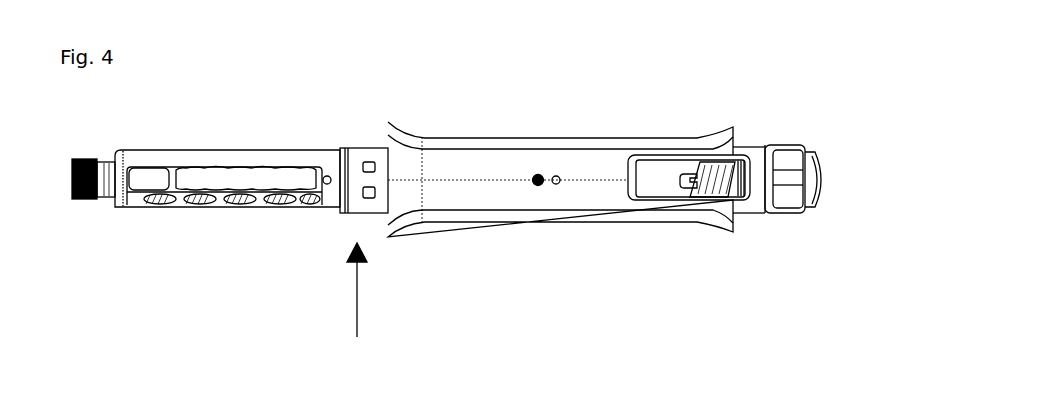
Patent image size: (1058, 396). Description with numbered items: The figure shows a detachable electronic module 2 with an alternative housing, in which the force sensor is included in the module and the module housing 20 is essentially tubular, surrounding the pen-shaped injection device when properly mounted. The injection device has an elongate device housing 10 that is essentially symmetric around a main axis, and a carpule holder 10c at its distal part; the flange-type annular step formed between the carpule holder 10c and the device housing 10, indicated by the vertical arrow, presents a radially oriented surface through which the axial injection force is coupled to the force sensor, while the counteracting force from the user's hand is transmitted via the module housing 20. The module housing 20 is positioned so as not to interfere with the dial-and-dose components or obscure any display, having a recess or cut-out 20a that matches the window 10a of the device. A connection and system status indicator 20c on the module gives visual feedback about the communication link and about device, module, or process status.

The electronic module 2 is at (528, 109).
The device housing 10 is at (352, 118).
The window 10a is at (747, 196).
The carpule holder 10c is at (225, 145).
The module housing 20 is at (465, 222).
The recess or cut-out 20a is at (672, 150).
The connection and system status indicator 20c is at (558, 183).